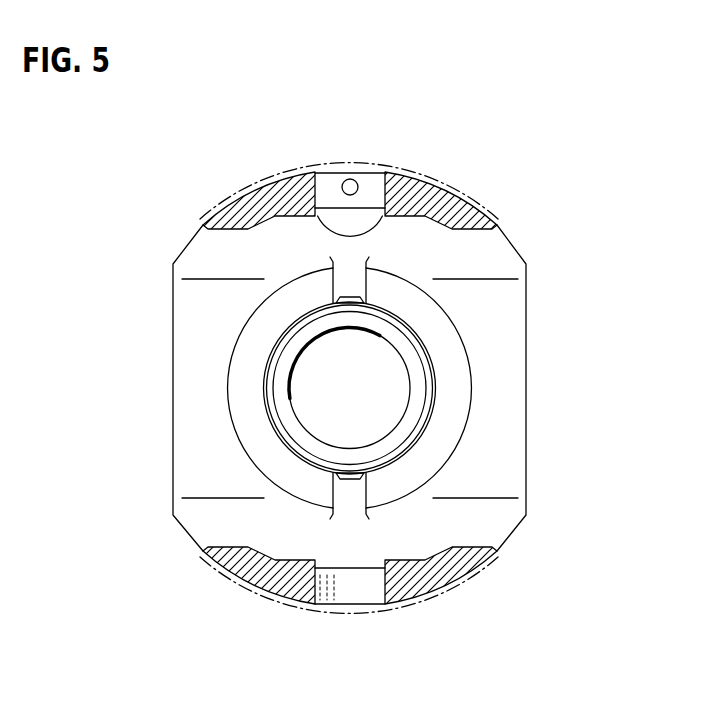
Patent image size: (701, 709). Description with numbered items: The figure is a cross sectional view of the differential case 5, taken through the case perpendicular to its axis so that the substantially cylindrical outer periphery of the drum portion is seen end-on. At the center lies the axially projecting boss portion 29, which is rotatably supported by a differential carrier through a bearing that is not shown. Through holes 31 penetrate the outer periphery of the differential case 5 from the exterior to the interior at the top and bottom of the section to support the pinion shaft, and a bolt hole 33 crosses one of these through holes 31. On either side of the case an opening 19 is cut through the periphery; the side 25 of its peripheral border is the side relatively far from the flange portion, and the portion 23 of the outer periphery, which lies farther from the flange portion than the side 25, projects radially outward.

The differential case 5 is at (513, 175).
The opening 19 is at (140, 323).
The portion of the outer periphery 23 is at (220, 358).
The side of the peripheral border 25 is at (183, 444).
The boss portion 29 is at (291, 425).
The through hole 31 is at (325, 178).
The bolt hole 33 is at (356, 184).